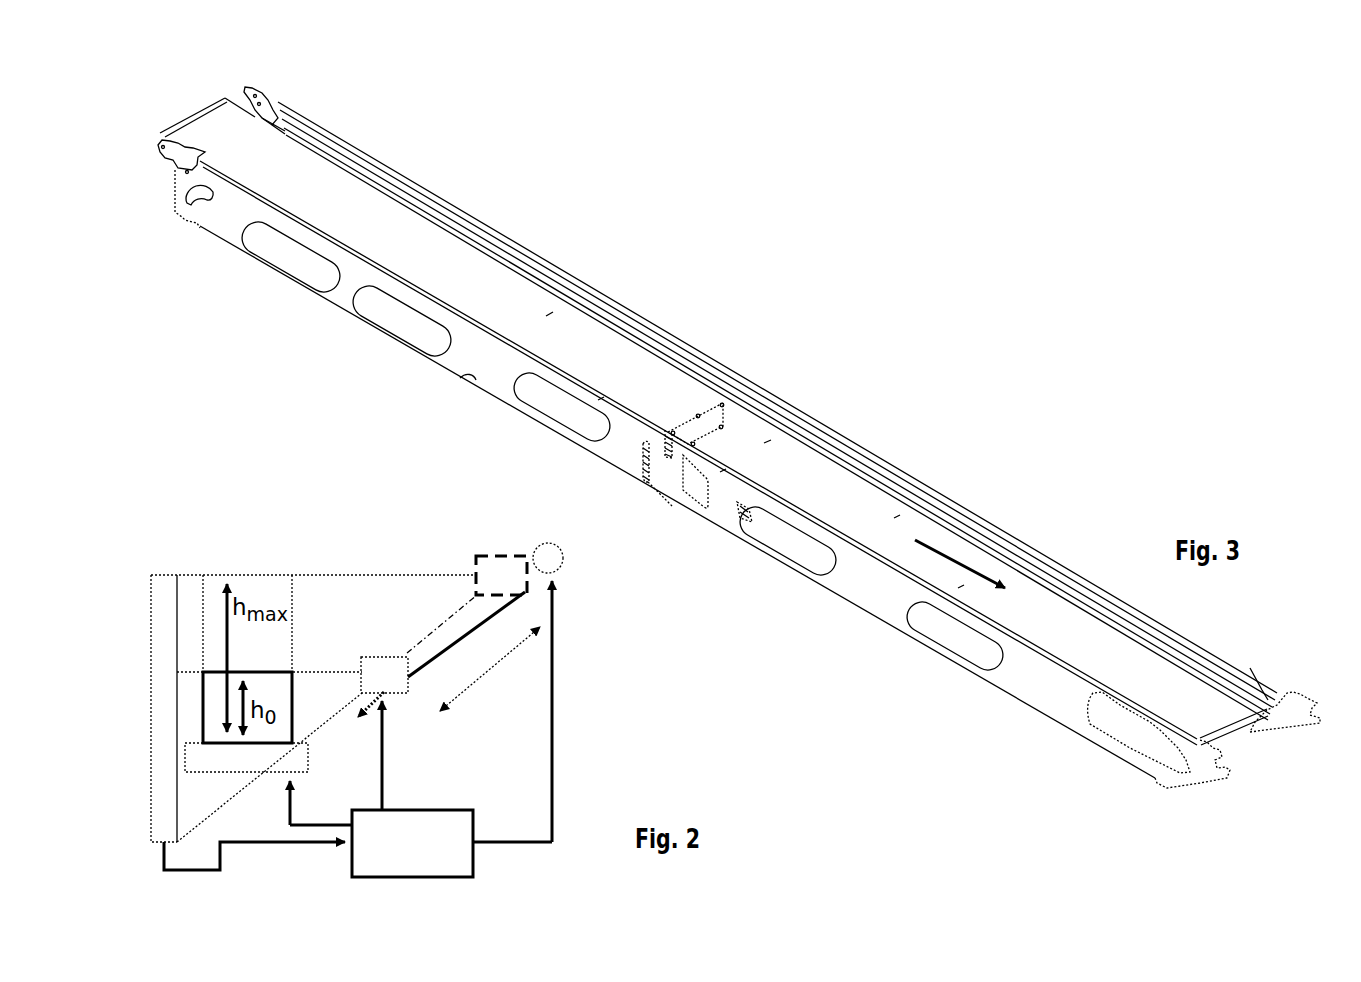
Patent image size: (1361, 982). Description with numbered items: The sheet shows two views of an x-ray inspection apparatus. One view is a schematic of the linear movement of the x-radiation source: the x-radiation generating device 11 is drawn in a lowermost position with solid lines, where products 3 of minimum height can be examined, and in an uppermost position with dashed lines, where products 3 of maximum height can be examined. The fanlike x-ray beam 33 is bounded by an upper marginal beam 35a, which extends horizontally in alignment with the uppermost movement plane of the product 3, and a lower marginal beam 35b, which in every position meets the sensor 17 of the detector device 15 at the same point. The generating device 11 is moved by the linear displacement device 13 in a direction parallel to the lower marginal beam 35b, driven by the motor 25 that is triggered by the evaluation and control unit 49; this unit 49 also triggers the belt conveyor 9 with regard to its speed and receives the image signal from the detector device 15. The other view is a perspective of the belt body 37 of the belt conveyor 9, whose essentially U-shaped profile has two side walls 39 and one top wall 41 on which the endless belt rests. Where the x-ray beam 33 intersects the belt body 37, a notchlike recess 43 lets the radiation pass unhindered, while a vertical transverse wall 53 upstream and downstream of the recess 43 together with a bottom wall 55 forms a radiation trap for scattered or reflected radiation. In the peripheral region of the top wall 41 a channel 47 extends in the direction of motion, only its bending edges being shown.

In FIG. 2, the product 3 is at (215, 692).
In FIG. 2, the belt conveyor 9 is at (277, 781).
In FIG. 2, the x-radiation generating device 11 is at (380, 673).
In FIG. 2, the linear displacement device 13 is at (439, 645).
In FIG. 2, the detector device 15 is at (146, 776).
In FIG. 2, the sensor 17 is at (163, 712).
In FIG. 2, the motor 25 is at (557, 562).
In FIG. 2, the fanlike x-ray beam 33 is at (317, 683).
In FIG. 2, the upper marginal beam 35a is at (343, 676).
In FIG. 2, the lower marginal beam 35b is at (332, 715).
In FIG. 3, the belt body 37 is at (803, 336).
In FIG. 3, the side walls 39 is at (1012, 693).
In FIG. 3, the top wall 41 is at (1195, 718).
In FIG. 3, the notchlike recess 43 is at (688, 438).
In FIG. 3, the channel 47 is at (1262, 697).
In FIG. 2, the evaluation and control unit 49 is at (443, 825).
In FIG. 3, the transverse wall 53 is at (655, 460).
In FIG. 3, the bottom wall 55 is at (690, 490).